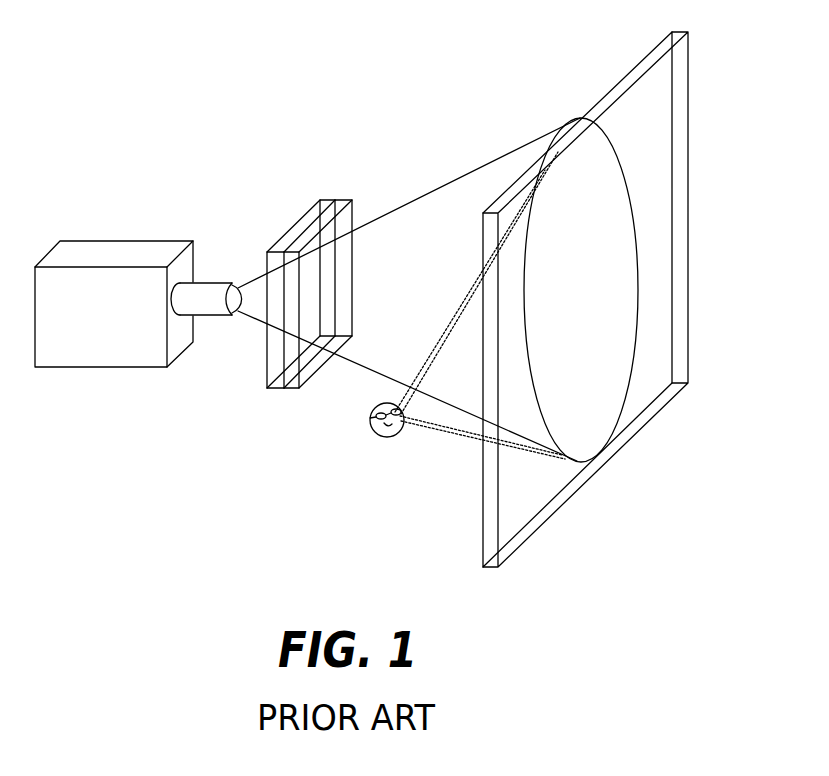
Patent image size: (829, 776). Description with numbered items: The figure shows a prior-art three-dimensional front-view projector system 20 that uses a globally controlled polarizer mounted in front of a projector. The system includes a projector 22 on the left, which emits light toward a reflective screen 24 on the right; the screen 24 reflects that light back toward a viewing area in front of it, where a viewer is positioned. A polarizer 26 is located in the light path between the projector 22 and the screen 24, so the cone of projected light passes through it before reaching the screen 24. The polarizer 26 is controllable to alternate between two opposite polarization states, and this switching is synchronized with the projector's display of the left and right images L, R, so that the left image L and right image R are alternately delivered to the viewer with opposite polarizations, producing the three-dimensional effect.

The front-view projector system 20 is at (197, 137).
The projector 22 is at (112, 241).
The reflective screen 24 is at (614, 84).
The polarizer 26 is at (340, 199).
The left image L is at (443, 346).
The right image R is at (419, 358).